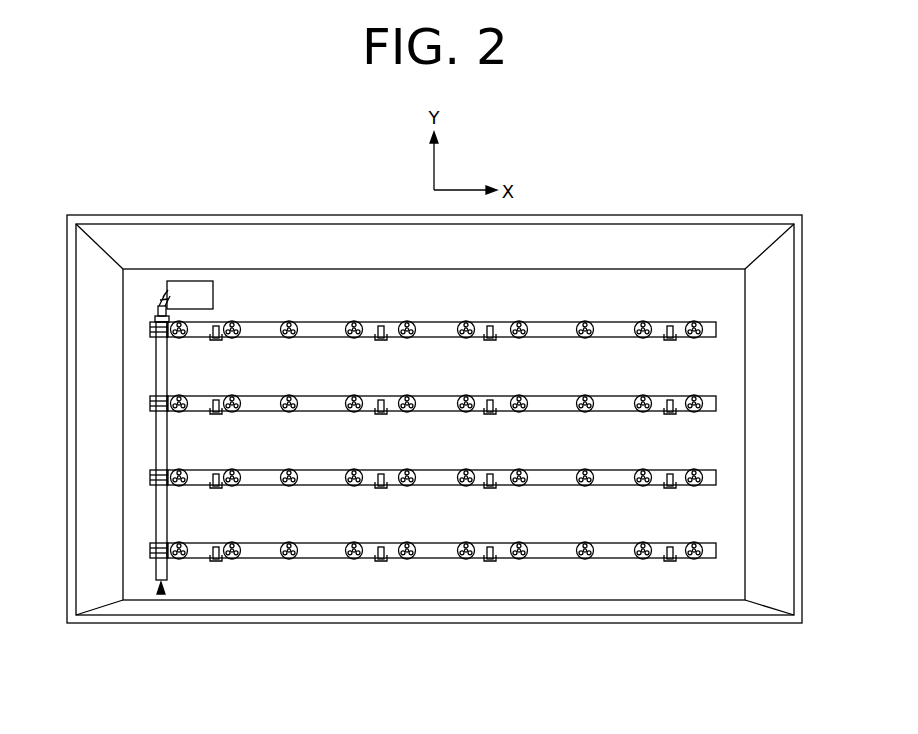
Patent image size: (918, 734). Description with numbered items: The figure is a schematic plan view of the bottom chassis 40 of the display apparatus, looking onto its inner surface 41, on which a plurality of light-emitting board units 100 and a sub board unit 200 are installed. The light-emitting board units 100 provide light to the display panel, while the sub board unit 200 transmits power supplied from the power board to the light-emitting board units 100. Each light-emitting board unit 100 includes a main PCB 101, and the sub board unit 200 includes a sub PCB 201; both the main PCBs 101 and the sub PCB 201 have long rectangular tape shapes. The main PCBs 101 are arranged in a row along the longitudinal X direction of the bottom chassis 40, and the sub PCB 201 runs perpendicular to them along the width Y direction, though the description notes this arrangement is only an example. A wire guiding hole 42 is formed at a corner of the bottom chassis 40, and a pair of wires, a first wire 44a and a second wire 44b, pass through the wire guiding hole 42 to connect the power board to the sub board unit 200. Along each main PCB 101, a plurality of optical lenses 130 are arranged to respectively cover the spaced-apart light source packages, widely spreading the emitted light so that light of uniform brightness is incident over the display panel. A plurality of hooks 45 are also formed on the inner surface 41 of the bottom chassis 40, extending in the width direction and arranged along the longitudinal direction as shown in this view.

The bottom chassis 40 is at (343, 233).
The inner surface 41 is at (265, 280).
The wire guiding hole 42 is at (192, 291).
The first wire 44a is at (160, 300).
The second wire 44b is at (160, 300).
The hooks 45 is at (496, 558).
The light-emitting board units 100 is at (498, 494).
The main PCB 101 is at (612, 553).
The optical lenses 130 is at (527, 553).
The sub board unit 200 is at (161, 594).
The sub PCB 201 is at (157, 517).